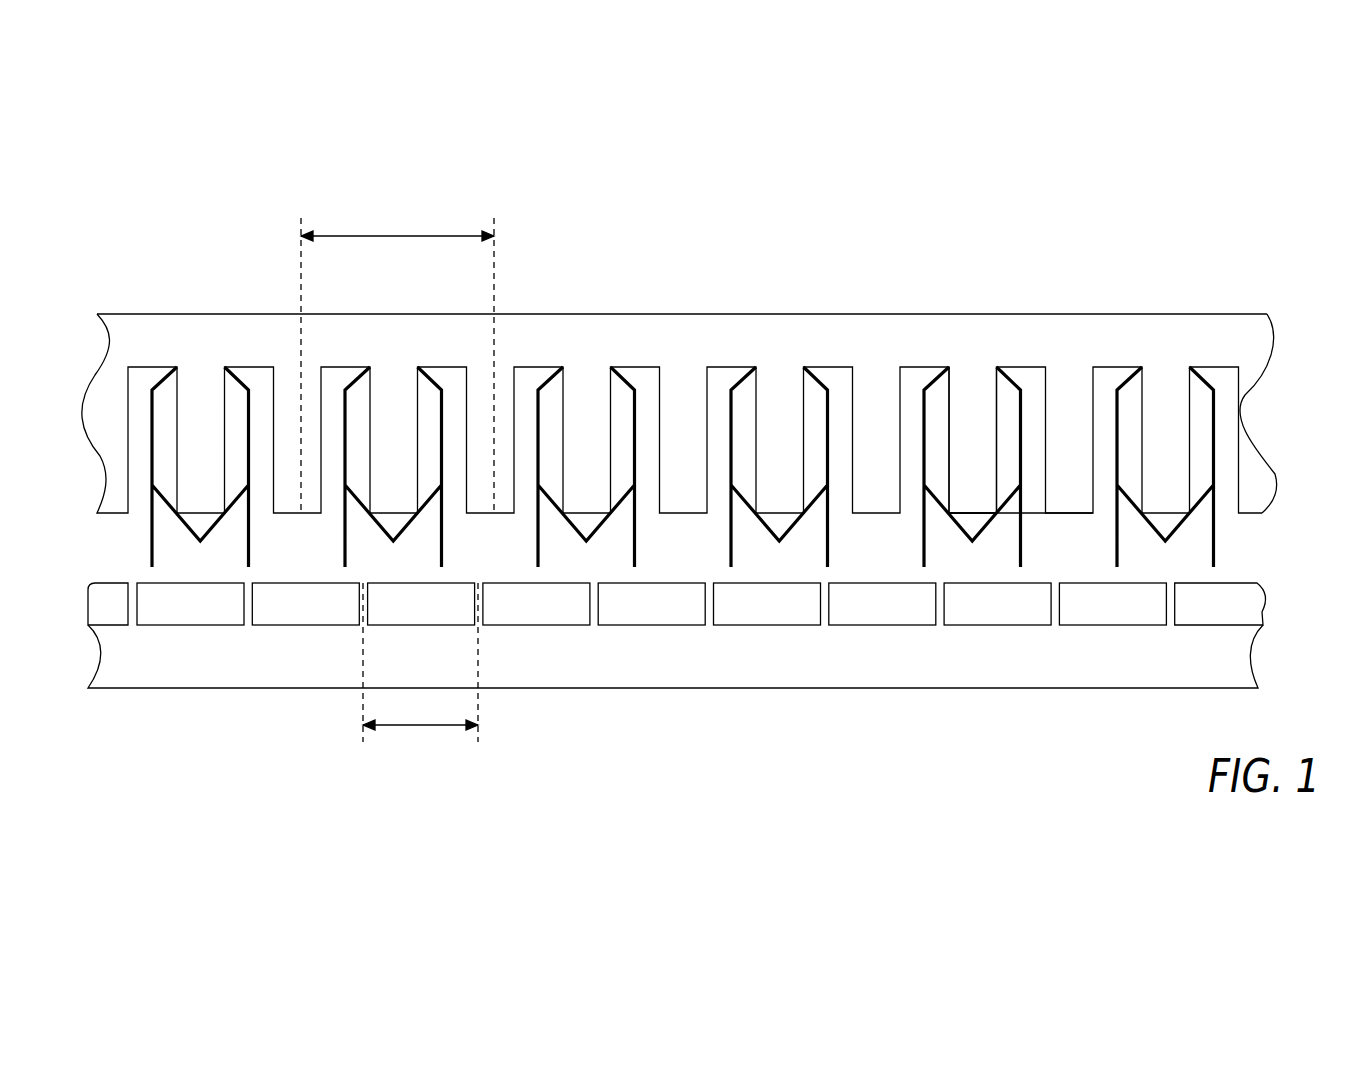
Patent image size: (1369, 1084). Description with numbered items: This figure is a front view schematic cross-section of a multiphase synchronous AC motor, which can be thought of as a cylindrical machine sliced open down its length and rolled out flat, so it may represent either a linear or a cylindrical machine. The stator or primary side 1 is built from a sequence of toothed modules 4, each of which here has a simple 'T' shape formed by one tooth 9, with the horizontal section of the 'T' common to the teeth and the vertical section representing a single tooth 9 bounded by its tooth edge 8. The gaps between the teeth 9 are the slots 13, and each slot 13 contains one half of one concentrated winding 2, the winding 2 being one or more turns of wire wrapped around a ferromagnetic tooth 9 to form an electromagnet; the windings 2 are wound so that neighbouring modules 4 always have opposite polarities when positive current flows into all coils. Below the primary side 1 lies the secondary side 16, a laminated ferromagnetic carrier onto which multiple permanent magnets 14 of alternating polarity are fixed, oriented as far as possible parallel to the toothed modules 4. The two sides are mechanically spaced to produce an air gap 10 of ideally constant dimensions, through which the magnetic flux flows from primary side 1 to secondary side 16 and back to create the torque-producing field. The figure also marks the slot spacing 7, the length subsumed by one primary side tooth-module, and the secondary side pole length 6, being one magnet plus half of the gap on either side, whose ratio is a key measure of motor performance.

The primary side 1 is at (1100, 342).
The concentrated winding 2 is at (1211, 418).
The toothed module 4 is at (406, 344).
The secondary side pole length 6 is at (442, 700).
The slot spacing 7 is at (417, 203).
The tooth edge 8 is at (1040, 378).
The tooth 9 is at (973, 405).
The air gap 10 is at (1227, 553).
The slot 13 is at (838, 385).
The permanent magnets 14 is at (284, 607).
The secondary side 16 is at (1147, 653).